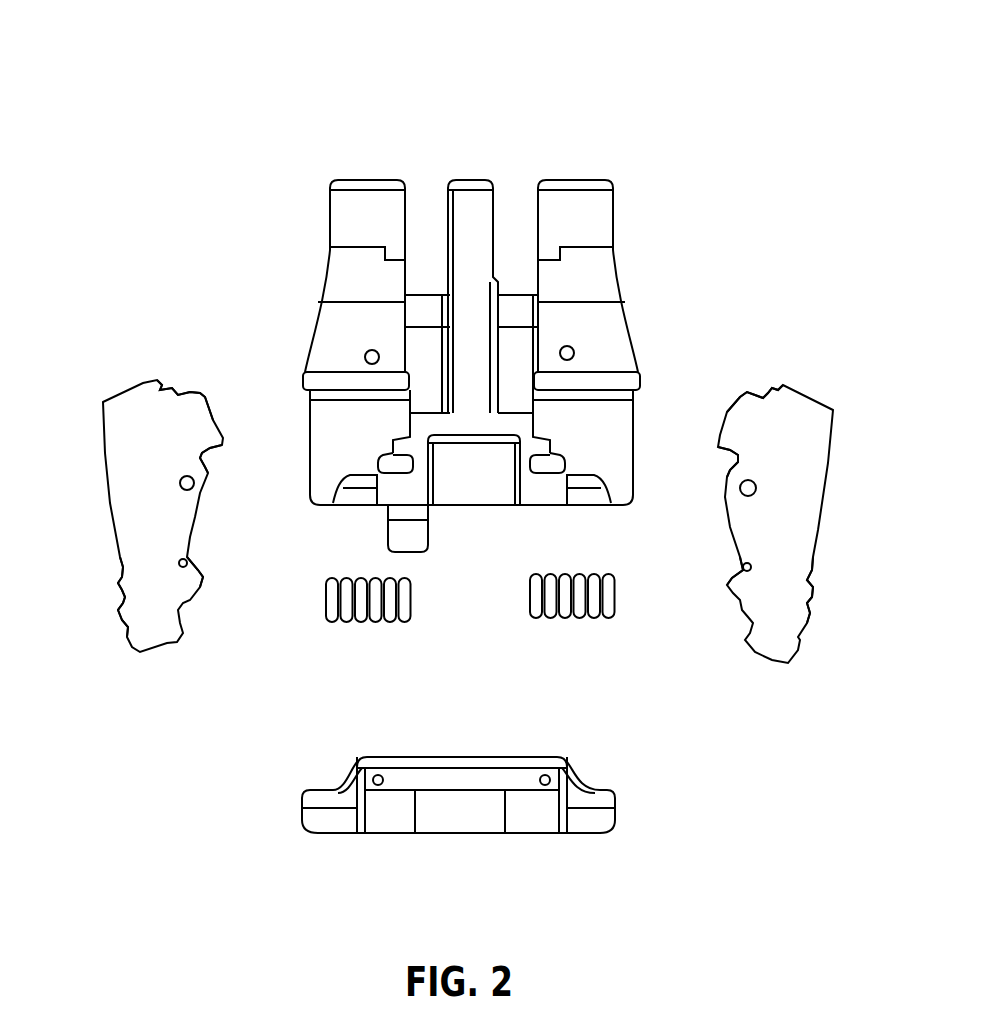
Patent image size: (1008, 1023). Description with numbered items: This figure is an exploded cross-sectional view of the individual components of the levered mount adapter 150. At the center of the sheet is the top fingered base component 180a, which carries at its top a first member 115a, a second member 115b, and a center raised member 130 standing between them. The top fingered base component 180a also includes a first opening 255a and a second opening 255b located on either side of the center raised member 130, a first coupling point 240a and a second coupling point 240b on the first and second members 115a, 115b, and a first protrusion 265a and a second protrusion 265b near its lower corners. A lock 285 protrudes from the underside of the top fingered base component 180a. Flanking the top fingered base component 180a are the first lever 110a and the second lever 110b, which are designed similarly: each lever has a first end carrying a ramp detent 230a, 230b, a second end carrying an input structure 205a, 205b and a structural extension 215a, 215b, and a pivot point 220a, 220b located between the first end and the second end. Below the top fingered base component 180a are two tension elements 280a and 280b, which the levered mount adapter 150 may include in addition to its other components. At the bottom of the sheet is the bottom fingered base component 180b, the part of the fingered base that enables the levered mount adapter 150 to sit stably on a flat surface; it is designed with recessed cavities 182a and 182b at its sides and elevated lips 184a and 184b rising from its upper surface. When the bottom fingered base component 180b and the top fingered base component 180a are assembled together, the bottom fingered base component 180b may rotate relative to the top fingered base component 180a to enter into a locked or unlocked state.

The levered mount adapter 150 is at (130, 133).
The first lever 110a is at (167, 475).
The second lever 110b is at (772, 491).
The first member 115a is at (362, 207).
The second member 115b is at (580, 198).
The center raised member 130 is at (473, 208).
The top fingered base component 180a is at (474, 470).
The bottom fingered base component 180b is at (483, 837).
The recessed cavity 182a is at (334, 775).
The recessed cavity 182b is at (601, 770).
The elevated lip 184a is at (360, 750).
The elevated lip 184b is at (556, 748).
The input structure 205a is at (118, 619).
The input structure 205b is at (814, 612).
The structural extension 215a is at (206, 577).
The structural extension 215b is at (724, 582).
The pivot point 220a is at (212, 468).
The pivot point 220b is at (724, 476).
The ramp detent 230a is at (204, 395).
The ramp detent 230b is at (724, 410).
The first coupling point 240a is at (355, 357).
The second coupling point 240b is at (587, 353).
The first opening 255a is at (417, 272).
The second opening 255b is at (533, 278).
The first protrusion 265a is at (395, 449).
The second protrusion 265b is at (550, 448).
The tension element 280a is at (368, 616).
The tension element 280b is at (572, 614).
The lock 285 is at (410, 528).